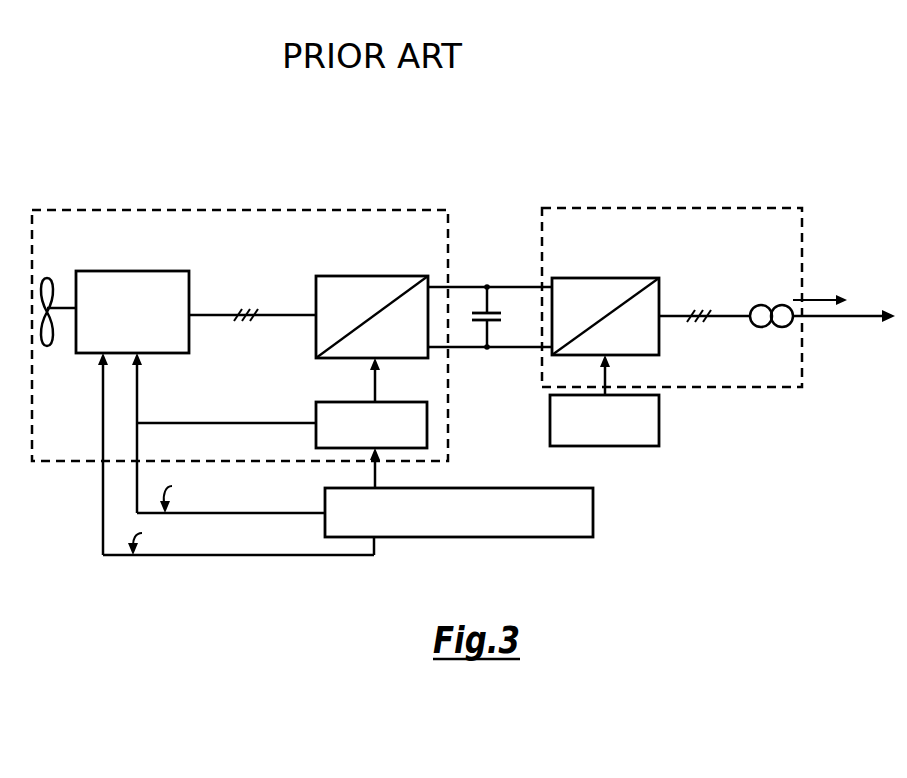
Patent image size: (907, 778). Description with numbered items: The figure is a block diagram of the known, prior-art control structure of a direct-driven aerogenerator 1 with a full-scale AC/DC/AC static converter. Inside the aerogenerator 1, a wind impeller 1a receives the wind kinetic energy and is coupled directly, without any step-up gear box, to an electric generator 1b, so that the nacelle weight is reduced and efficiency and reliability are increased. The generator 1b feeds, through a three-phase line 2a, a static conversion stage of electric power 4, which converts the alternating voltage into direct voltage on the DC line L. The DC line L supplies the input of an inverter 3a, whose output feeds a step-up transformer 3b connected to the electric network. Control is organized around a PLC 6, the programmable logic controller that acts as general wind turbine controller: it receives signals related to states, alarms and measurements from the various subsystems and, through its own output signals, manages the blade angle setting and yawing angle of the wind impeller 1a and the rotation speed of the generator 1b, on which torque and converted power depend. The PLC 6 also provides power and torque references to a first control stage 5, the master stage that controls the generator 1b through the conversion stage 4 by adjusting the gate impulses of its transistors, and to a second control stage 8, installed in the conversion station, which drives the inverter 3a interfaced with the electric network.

The aerogenerator 1 is at (406, 205).
The wind impeller 1a is at (49, 278).
The electric generator 1b is at (140, 283).
The three-phase line 2a is at (217, 302).
The static conversion stage of electric power 4 is at (316, 333).
The DC line L is at (468, 276).
The inverter 3a is at (602, 290).
The step-up transformer 3b is at (760, 294).
The first control stage 5 is at (402, 404).
The PLC 6 is at (488, 495).
The second control stage 8 is at (652, 422).